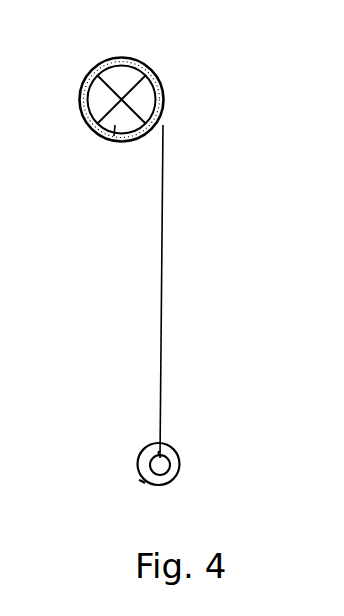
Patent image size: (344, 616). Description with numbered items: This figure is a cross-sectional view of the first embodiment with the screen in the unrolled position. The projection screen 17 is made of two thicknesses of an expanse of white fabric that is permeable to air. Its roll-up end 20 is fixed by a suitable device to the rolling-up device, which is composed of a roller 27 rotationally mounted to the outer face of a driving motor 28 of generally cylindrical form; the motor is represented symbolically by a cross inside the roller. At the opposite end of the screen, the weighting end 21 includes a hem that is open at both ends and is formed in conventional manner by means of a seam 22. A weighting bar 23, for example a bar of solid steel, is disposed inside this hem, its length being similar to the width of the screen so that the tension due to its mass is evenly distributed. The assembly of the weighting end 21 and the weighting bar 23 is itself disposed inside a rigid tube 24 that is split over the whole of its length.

The projection screen 17 is at (162, 293).
The roll-up end 20 is at (164, 103).
The weighting end 21 is at (170, 448).
The seam 22 is at (150, 447).
The weighting bar 23 is at (163, 467).
The rigid tube 24 is at (145, 478).
The roller 27 is at (148, 70).
The driving motor 28 is at (112, 137).